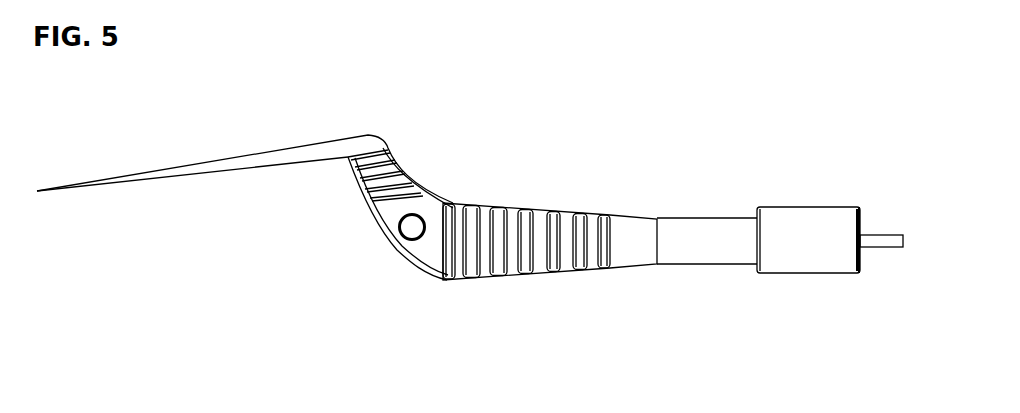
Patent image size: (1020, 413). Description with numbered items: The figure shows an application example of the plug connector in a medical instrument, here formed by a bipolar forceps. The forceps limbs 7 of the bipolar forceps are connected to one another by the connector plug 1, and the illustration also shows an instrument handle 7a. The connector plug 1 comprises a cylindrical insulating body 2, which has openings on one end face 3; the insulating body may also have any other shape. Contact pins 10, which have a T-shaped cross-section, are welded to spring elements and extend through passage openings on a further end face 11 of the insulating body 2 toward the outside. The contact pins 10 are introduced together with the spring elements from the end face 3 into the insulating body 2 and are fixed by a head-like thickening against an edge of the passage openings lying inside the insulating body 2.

The connector plug 1 is at (818, 178).
The insulating body 2 is at (828, 263).
The end face 3 is at (753, 283).
The forceps limbs 7 is at (498, 200).
The instrument handle 7a is at (523, 270).
The contact pins 10 is at (906, 239).
The further end face 11 is at (873, 270).